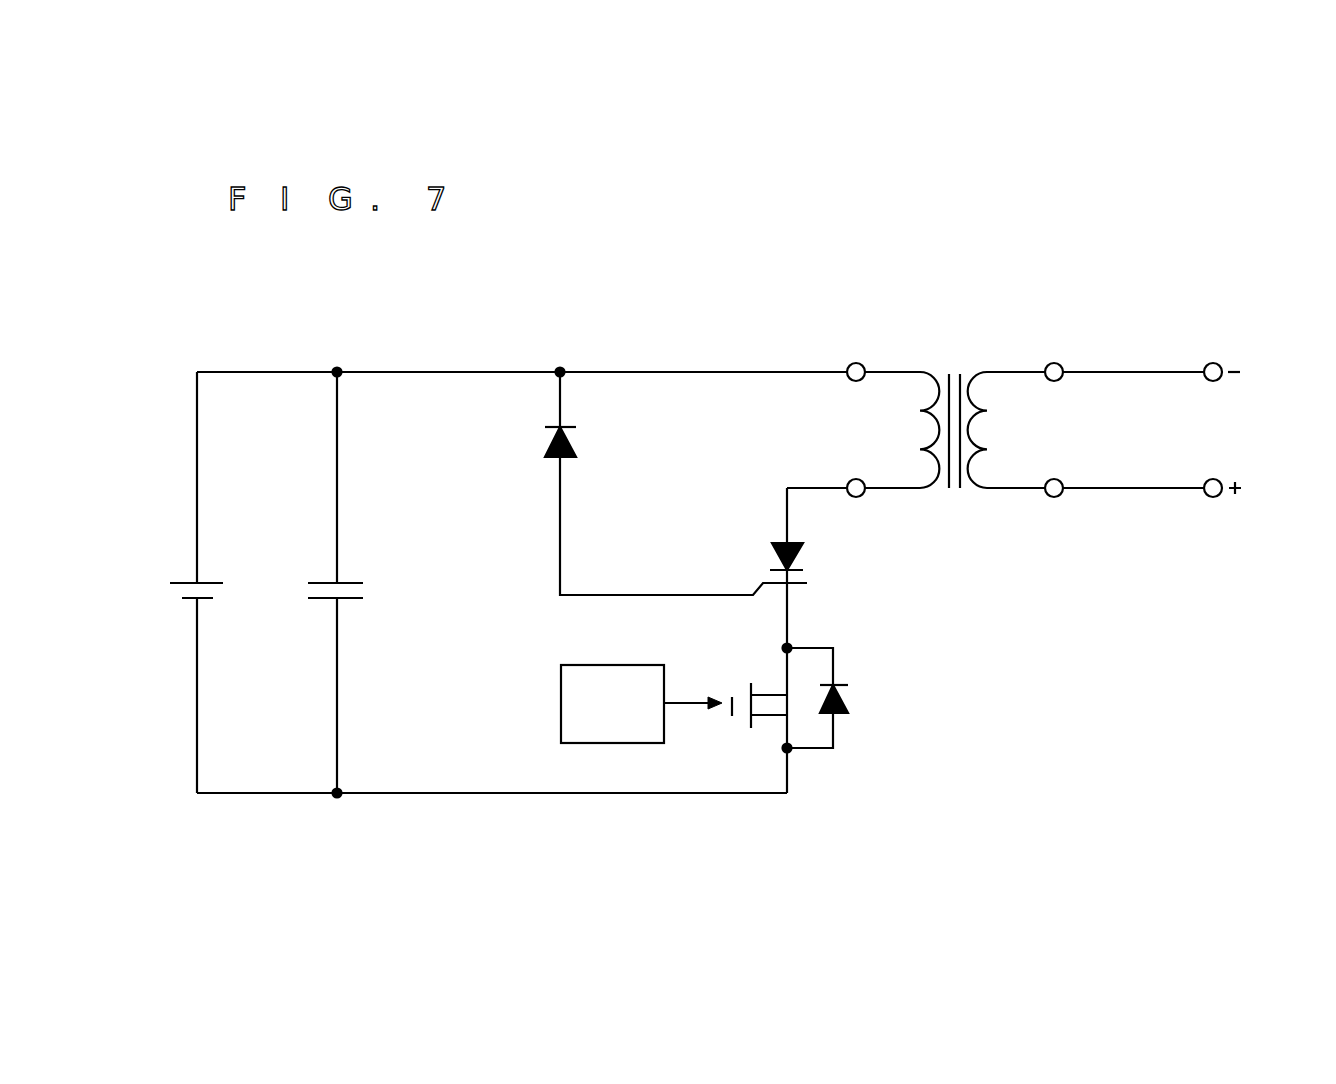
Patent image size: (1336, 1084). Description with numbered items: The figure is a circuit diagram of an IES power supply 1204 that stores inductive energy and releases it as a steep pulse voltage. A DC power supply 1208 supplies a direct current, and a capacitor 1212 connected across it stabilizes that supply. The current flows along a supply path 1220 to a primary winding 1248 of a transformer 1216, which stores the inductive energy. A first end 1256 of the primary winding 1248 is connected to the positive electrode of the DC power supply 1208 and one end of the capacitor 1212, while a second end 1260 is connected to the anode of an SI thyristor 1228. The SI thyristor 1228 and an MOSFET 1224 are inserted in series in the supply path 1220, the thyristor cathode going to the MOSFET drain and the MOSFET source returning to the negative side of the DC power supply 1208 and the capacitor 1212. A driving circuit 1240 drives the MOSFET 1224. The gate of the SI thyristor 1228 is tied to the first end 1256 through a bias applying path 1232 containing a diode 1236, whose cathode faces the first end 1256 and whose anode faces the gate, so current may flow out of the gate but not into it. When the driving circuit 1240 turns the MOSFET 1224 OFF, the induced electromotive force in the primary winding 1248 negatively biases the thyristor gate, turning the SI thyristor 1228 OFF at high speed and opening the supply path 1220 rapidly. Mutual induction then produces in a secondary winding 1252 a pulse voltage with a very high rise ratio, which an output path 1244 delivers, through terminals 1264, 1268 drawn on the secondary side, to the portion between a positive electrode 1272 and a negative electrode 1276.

The IES power supply 1204 is at (1008, 388).
The DC power supply 1208 is at (214, 581).
The capacitor 1212 is at (352, 581).
The transformer 1216 is at (955, 496).
The supply path 1220 is at (459, 371).
The MOSFET 1224 is at (735, 684).
The SI thyristor 1228 is at (796, 554).
The bias applying path 1232 is at (656, 594).
The diode 1236 is at (578, 443).
The driving circuit 1240 is at (613, 664).
The output path 1244 is at (1135, 371).
The primary winding 1248 is at (924, 371).
The secondary winding 1252 is at (987, 371).
The first end 1256 is at (855, 362).
The second end 1260 is at (856, 498).
The secondary terminal 1264 is at (1054, 362).
The secondary terminal 1268 is at (1054, 498).
The positive electrode 1272 is at (1213, 498).
The negative electrode 1276 is at (1213, 362).